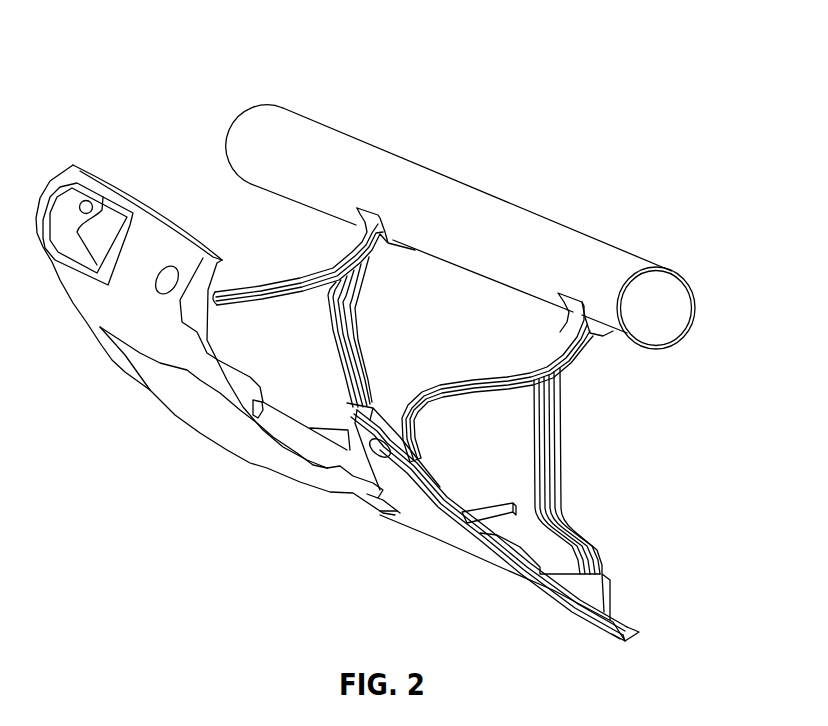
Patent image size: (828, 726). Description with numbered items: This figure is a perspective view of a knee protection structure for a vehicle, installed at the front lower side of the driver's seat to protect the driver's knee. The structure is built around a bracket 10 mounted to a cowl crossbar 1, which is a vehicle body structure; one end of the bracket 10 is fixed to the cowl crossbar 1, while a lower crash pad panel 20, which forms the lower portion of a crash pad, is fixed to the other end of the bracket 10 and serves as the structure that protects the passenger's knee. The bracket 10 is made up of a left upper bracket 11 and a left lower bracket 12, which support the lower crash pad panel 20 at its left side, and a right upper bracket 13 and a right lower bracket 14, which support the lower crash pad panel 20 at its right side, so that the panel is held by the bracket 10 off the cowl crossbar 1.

The cowl crossbar 1 is at (363, 162).
The bracket 10 is at (452, 383).
The left upper bracket 11 is at (256, 291).
The left lower bracket 12 is at (362, 351).
The right upper bracket 13 is at (468, 385).
The right lower bracket 14 is at (563, 491).
The lower crash pad panel 20 is at (148, 410).